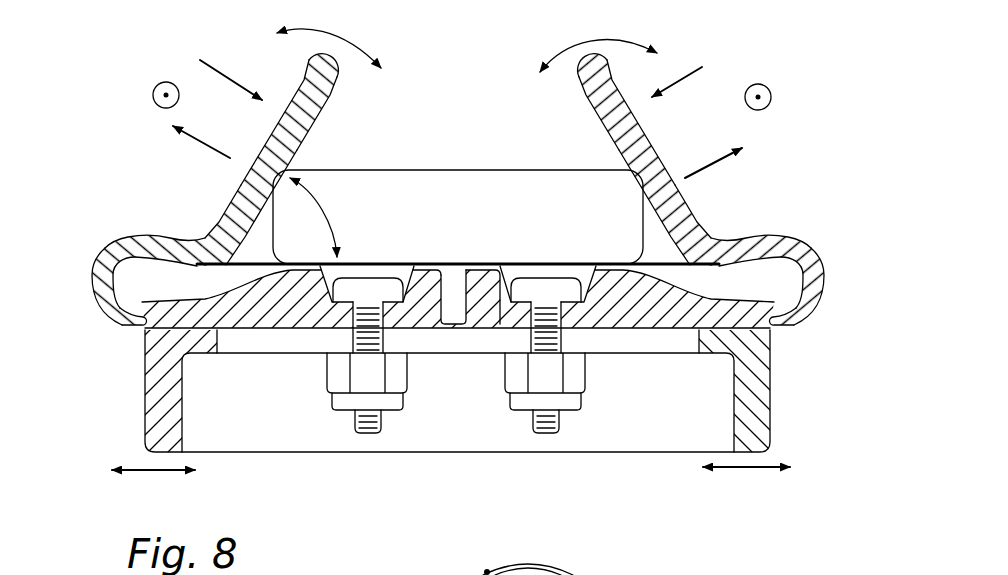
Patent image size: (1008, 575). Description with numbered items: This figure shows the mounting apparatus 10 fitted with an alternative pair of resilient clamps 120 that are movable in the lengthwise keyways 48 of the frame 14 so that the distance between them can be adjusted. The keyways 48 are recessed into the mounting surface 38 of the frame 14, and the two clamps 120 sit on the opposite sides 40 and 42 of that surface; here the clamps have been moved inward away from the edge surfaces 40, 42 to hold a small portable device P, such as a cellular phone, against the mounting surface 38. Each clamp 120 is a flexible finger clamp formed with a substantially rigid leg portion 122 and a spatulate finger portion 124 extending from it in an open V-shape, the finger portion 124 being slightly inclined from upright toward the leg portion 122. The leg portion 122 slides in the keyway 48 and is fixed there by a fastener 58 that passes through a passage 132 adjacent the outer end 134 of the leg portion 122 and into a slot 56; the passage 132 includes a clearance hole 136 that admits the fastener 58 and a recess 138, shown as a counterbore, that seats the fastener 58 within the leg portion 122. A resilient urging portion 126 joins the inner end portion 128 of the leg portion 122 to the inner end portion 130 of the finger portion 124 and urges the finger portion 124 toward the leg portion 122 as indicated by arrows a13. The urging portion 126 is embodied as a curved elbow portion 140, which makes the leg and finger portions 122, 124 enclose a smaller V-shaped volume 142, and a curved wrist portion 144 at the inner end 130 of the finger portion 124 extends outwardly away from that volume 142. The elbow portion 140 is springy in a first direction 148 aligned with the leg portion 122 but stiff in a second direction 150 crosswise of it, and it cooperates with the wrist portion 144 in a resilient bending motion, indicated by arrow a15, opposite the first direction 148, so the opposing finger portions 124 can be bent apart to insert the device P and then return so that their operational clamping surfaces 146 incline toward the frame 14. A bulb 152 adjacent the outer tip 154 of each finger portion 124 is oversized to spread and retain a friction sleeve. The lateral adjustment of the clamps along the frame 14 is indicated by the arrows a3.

The mounting apparatus 10 is at (150, 62).
The frame 14 is at (281, 453).
The mounting surface 38 is at (458, 263).
The opposite side / edge surface of the frame 40 is at (770, 420).
The opposite side / edge surface of the frame 42 is at (147, 393).
The lengthwise keyway 48 is at (100, 256).
The slot 56 is at (248, 347).
The fastener 58 is at (370, 290).
The portable device P is at (440, 168).
The resilient clamp 120 is at (100, 313).
The leg portion 122 is at (264, 324).
The finger portion 124 is at (264, 147).
The resilient urging portion 126 is at (100, 273).
The inner end portion of the leg portion 128 is at (143, 320).
The inner end portion of the finger portion 130 is at (221, 221).
The passage 132 is at (347, 325).
The outer end of the leg portion 134 is at (424, 268).
The clearance hole 136 is at (392, 304).
The recess 138 is at (417, 265).
The curved elbow portion 140 is at (100, 288).
The V-shaped volume 142 is at (320, 202).
The curved wrist portion 144 is at (198, 238).
The operational clamping surface 146 is at (307, 132).
The first direction 148 is at (334, 33).
The second direction 150 is at (153, 104).
The bulb 152 is at (338, 80).
The outer tip 154 is at (299, 79).
The lateral direction a3 is at (153, 472).
The urging direction arrows a13 is at (207, 61).
The resilient bending motion arrow a15 is at (197, 143).